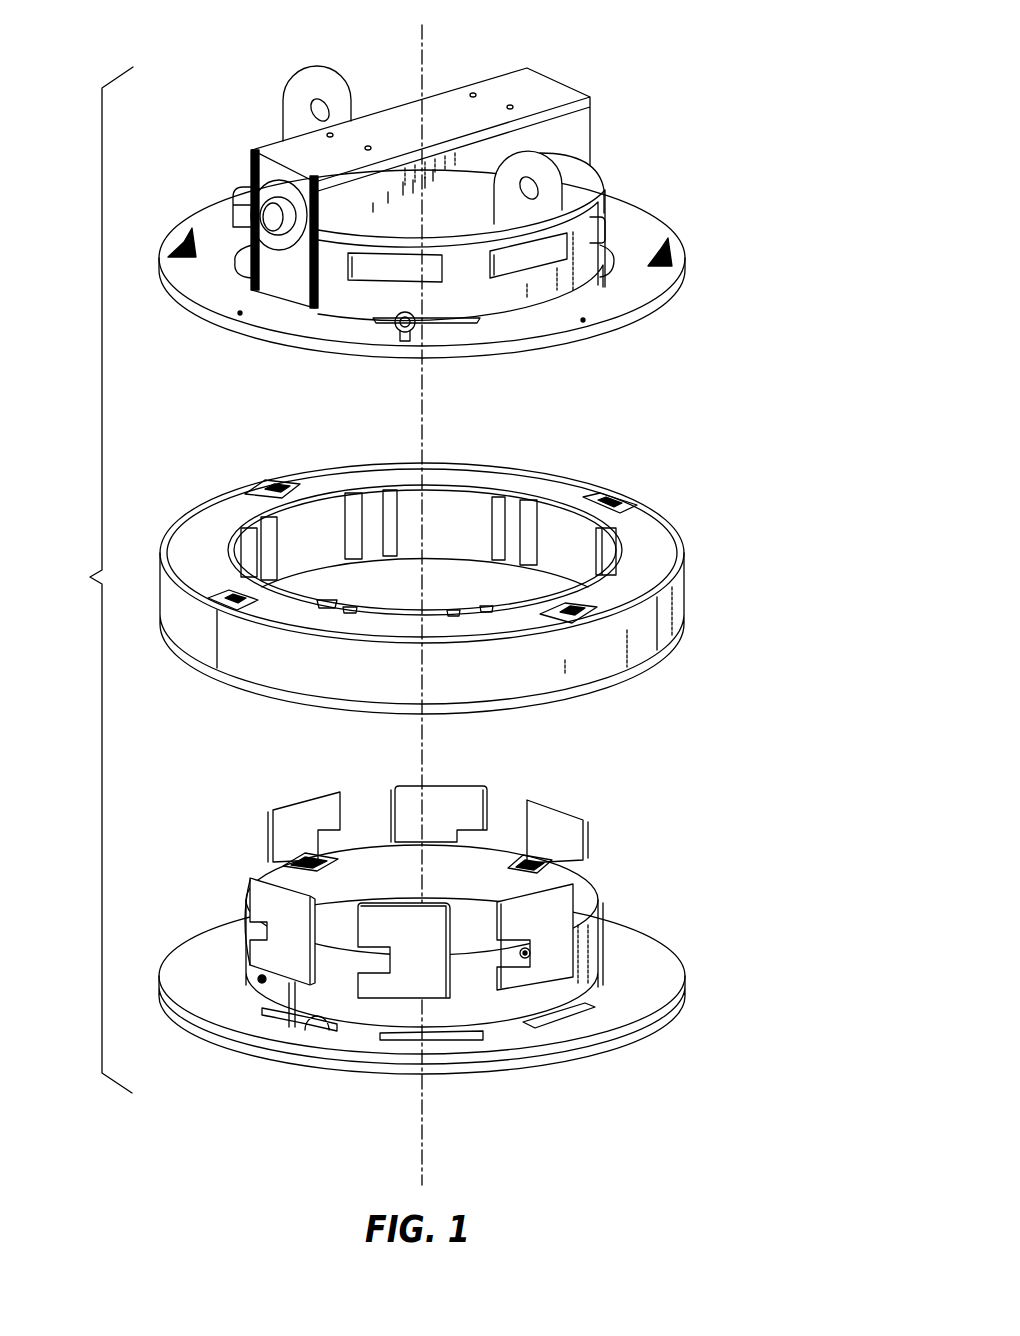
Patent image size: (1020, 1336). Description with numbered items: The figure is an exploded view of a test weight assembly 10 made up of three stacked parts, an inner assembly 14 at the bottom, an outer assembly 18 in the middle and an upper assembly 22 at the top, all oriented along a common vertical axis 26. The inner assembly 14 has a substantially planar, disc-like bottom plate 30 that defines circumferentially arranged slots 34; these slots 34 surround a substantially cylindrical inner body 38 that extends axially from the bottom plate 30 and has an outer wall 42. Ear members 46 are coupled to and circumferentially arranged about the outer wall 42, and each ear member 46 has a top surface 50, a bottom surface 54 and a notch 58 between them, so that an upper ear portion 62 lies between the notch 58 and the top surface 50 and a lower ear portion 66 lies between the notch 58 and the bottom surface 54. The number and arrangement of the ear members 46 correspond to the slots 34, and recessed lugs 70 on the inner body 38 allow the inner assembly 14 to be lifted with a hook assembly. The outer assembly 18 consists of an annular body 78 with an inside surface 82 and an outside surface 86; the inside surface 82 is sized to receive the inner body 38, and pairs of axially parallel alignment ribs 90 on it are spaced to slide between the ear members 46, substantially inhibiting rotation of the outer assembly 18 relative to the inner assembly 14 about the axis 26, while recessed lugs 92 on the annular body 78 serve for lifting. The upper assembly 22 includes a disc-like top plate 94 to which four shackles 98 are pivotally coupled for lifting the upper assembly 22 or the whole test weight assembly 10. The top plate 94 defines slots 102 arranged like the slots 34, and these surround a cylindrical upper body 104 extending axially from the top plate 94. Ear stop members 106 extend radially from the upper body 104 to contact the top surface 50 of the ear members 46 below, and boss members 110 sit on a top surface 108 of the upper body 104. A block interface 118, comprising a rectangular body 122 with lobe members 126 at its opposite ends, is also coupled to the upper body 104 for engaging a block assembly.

The test weight assembly 10 is at (93, 580).
The inner assembly 14 is at (448, 956).
The outer assembly 18 is at (451, 551).
The upper assembly 22 is at (469, 205).
The vertical axis 26 is at (425, 1138).
The bottom plate 30 is at (658, 958).
The slots 34 is at (317, 1003).
The inner body 38 is at (338, 878).
The outer wall 42 is at (602, 977).
The ear members 46 is at (565, 800).
The top surface 50 is at (283, 802).
The bottom surface 54 is at (282, 963).
The notch 58 is at (517, 960).
The upper ear portion 62 is at (313, 790).
The lower ear portion 66 is at (265, 983).
The recessed lugs 70 is at (560, 868).
The annular body 78 is at (647, 533).
The inside surface 82 is at (557, 527).
The outside surface 86 is at (677, 597).
The alignment ribs 90 is at (283, 547).
The recessed lugs 92 is at (270, 480).
The top plate 94 is at (642, 228).
The shackles 98 is at (180, 240).
The slots 102 is at (240, 253).
The upper body 104 is at (340, 284).
The ear stop members 106 is at (240, 192).
The top surface 108 is at (588, 172).
The boss members 110 is at (334, 89).
The block interface 118 is at (512, 78).
The rectangular body 122 is at (447, 105).
The lobe members 126 is at (273, 197).